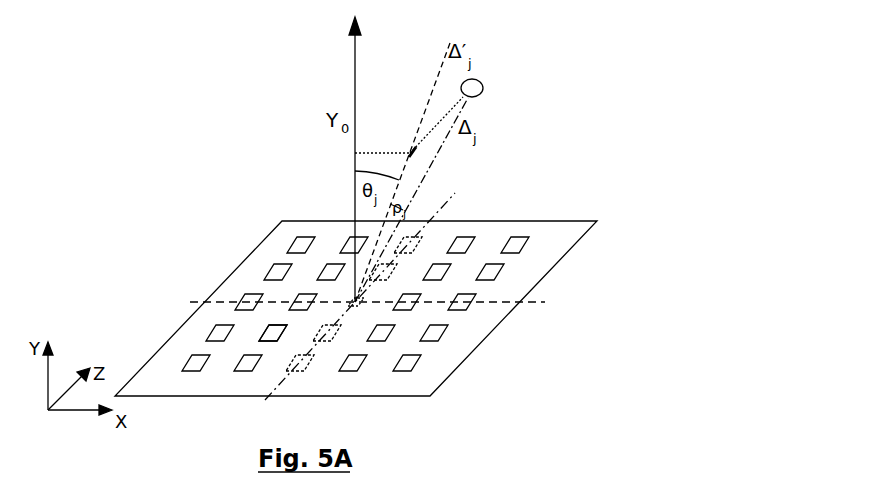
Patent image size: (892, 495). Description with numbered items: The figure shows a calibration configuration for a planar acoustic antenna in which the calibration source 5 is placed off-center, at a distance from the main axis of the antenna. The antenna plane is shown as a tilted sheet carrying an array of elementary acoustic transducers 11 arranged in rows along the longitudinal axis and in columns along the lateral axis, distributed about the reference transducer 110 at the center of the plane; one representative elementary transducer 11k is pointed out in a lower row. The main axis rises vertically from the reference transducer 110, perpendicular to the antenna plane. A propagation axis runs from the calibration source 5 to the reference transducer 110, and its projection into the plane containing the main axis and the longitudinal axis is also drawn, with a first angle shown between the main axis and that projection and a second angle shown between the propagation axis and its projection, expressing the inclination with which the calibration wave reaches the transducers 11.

The calibration source 5 is at (491, 88).
The elementary acoustic transducers 11 is at (356, 296).
The reference transducer 110 is at (356, 320).
The elementary acoustic transducer 11k is at (254, 339).